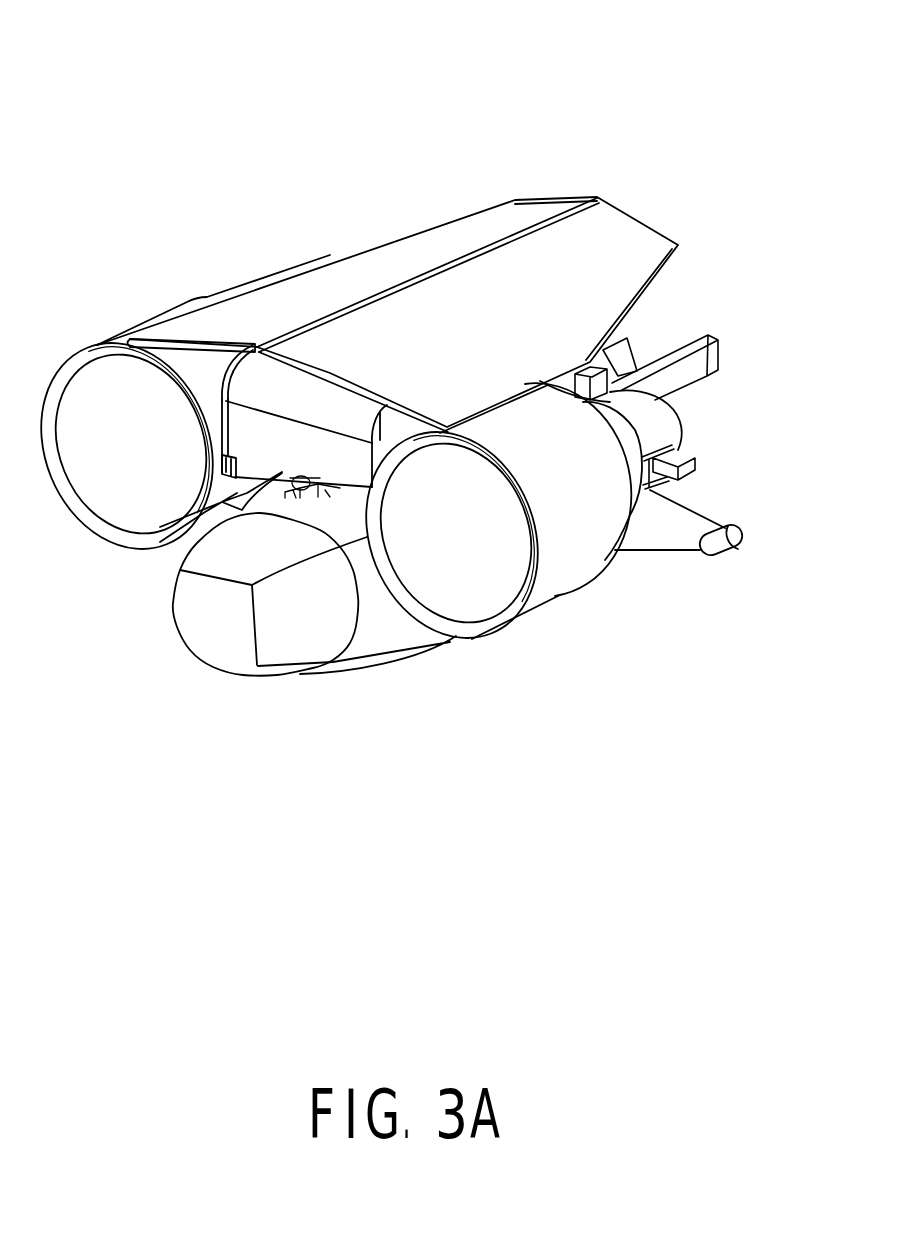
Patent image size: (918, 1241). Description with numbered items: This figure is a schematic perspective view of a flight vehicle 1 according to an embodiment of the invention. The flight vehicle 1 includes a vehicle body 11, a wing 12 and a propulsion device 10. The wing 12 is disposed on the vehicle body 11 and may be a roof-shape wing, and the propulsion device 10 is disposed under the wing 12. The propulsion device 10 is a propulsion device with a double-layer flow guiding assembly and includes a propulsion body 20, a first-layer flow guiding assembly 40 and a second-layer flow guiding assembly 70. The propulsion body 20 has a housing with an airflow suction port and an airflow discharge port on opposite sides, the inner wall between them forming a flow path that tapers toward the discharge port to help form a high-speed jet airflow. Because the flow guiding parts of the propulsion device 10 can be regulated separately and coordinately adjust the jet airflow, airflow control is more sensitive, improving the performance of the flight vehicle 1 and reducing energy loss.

The flight vehicle 1 is at (118, 38).
The propulsion device 10 is at (110, 285).
The vehicle body 11 is at (215, 623).
The wing 12 is at (342, 275).
The propulsion body 20 is at (623, 615).
The first-layer flow guiding assembly 40 is at (643, 470).
The second-layer flow guiding assembly 70 is at (657, 422).